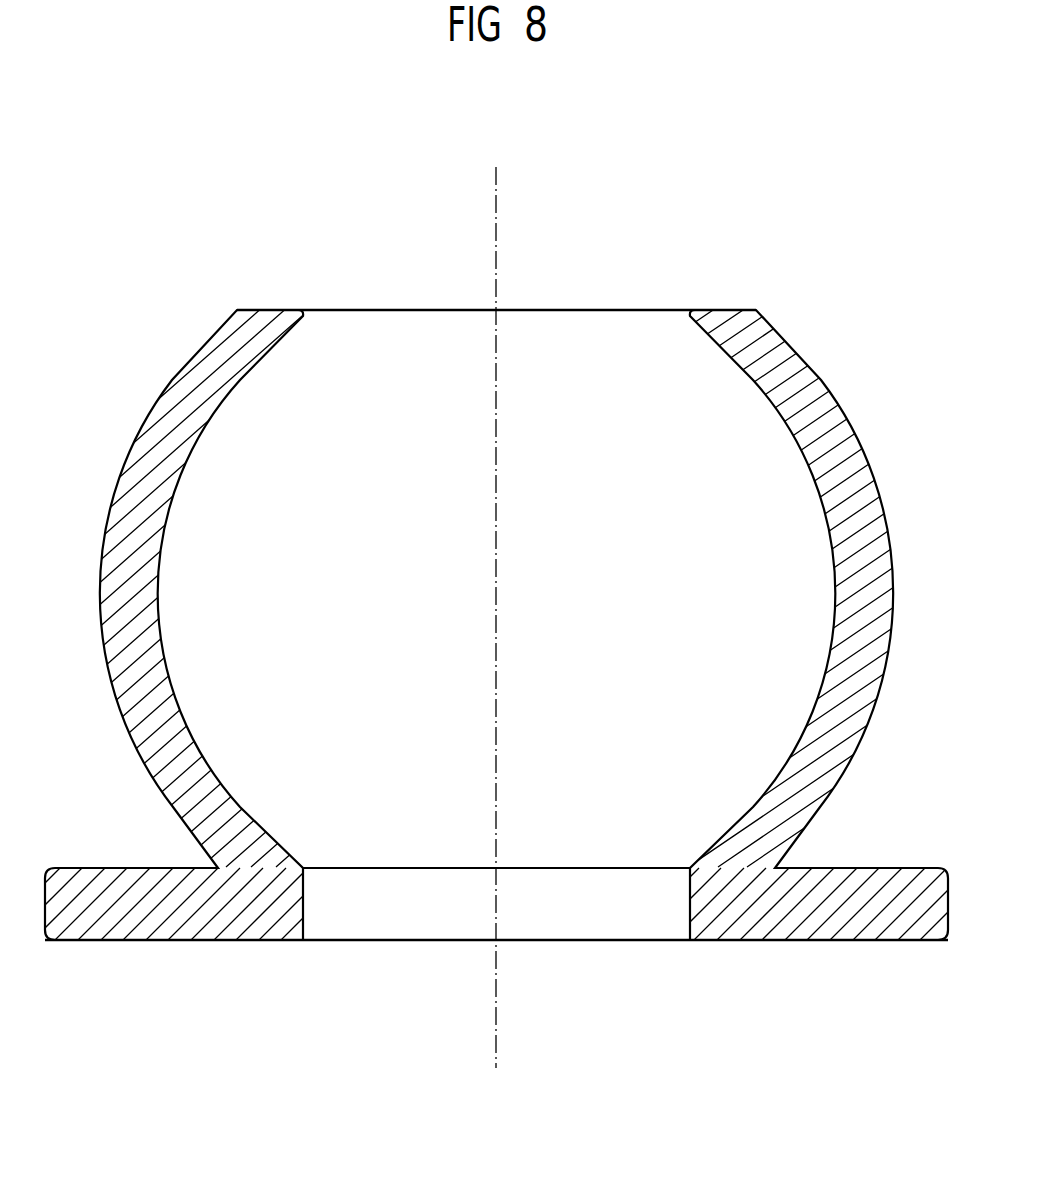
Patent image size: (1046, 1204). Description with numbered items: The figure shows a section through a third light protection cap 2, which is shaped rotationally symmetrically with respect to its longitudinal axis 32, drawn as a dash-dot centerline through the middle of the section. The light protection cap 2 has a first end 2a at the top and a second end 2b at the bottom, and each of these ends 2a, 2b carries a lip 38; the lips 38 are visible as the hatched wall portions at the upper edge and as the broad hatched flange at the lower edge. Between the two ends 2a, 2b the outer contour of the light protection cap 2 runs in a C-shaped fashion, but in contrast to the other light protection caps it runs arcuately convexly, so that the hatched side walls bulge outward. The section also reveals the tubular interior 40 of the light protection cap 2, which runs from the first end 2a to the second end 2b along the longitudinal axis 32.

The light protection cap 2 is at (500, 556).
The first end 2a is at (653, 310).
The second end 2b is at (653, 943).
The longitudinal axis 32 is at (497, 190).
The lip 38 is at (767, 323).
The tubular interior 40 is at (646, 627).